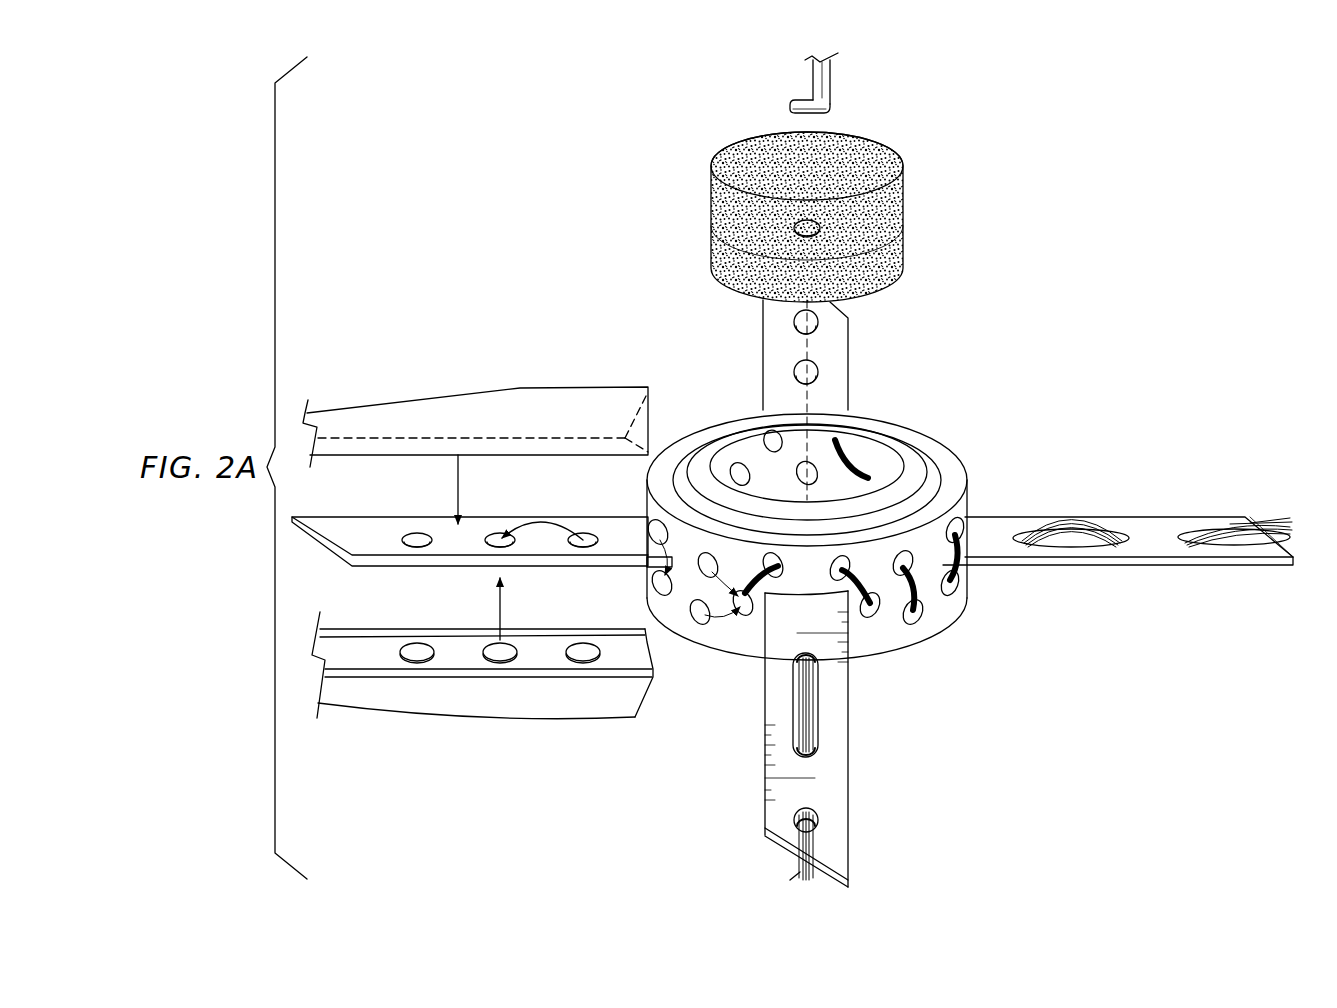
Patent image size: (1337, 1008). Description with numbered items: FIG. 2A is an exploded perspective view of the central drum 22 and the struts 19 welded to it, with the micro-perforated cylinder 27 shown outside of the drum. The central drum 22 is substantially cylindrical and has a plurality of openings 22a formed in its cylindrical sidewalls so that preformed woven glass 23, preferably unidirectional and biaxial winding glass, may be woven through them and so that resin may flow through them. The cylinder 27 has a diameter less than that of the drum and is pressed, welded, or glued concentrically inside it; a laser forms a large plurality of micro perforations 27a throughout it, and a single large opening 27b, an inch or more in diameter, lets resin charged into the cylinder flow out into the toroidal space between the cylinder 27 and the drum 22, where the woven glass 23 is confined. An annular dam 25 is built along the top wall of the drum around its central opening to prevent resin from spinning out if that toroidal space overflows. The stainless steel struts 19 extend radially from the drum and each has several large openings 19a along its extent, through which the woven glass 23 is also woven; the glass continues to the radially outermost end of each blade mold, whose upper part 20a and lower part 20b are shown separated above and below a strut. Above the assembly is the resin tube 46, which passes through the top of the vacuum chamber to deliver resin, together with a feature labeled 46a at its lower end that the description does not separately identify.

The stainless steel strut 19 is at (848, 342).
The strut opening 19a is at (796, 318).
The upper part of blade mold 20a is at (375, 403).
The lower part of blade mold 20b is at (530, 716).
The central drum 22 is at (840, 520).
The drum opening 22a is at (742, 466).
The preformed woven glass 23 is at (852, 455).
The annular dam 25 is at (925, 452).
The cylinder 27 is at (792, 217).
The micro perforations 27a is at (903, 212).
The large opening 27b is at (794, 228).
The resin tube 46 is at (812, 66).
The hook foot 46a is at (791, 105).